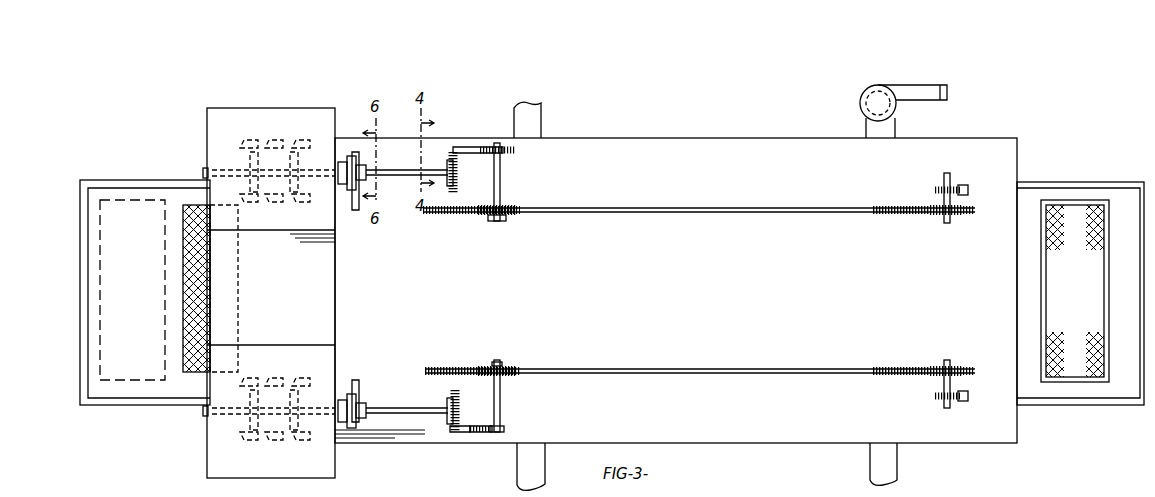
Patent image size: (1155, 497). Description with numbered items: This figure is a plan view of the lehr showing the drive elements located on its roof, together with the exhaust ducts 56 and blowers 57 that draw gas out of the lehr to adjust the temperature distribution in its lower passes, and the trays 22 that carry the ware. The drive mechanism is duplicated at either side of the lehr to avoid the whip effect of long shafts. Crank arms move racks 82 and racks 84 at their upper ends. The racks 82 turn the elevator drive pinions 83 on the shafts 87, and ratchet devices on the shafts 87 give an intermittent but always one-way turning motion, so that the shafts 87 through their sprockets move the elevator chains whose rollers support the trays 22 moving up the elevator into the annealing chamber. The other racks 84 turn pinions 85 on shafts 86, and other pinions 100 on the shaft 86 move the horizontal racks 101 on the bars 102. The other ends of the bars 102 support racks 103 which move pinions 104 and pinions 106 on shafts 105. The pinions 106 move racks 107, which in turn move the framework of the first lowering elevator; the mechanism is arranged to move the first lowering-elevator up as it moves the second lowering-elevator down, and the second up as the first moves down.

The trays 22 is at (183, 372).
The ducts 56 is at (540, 110).
The blowers 57 is at (860, 103).
The racks 82 is at (455, 433).
The elevator drive pinions 83 is at (452, 394).
The racks 84 is at (478, 433).
The pinions 85 is at (505, 430).
The shafts 86 is at (500, 172).
The shafts 87 is at (380, 176).
The pinions 100 is at (507, 366).
The horizontal racks 101 is at (470, 369).
The bars 102 is at (678, 208).
The racks 103 is at (913, 208).
The pinions 104 is at (942, 362).
The shafts 105 is at (950, 198).
The pinions 106 is at (935, 398).
The racks 107 is at (966, 186).